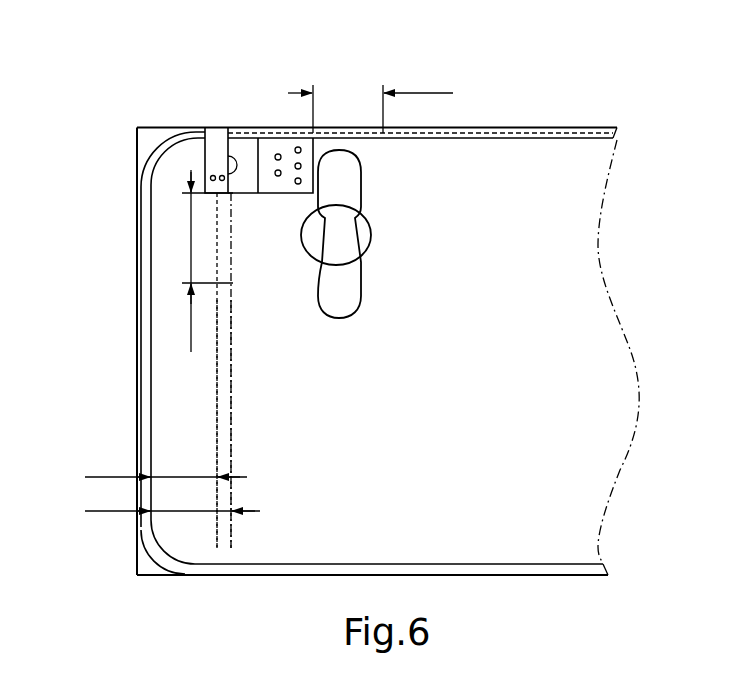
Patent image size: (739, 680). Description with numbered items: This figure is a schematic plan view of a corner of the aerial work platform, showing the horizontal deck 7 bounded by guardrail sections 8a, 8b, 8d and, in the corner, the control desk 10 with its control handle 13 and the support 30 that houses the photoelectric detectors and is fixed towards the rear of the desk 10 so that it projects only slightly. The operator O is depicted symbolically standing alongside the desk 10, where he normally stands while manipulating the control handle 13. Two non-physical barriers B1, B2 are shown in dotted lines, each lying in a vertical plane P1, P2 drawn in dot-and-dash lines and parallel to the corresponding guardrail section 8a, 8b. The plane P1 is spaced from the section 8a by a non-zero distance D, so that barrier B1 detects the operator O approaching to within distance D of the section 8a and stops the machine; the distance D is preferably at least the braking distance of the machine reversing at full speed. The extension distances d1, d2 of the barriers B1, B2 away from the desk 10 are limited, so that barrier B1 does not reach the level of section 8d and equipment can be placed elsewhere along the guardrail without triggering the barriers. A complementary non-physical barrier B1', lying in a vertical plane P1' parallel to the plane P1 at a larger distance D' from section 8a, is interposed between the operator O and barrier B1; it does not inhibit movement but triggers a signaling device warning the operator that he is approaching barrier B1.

The deck 7 is at (562, 288).
The guardrail section 8a is at (141, 355).
The guardrail section 8b is at (578, 127).
The guardrail section 8d is at (276, 576).
The control desk 10 is at (192, 158).
The control handle 13 is at (243, 147).
The support 30 is at (217, 142).
The operator O is at (360, 235).
The non-physical barrier B1 is at (133, 370).
The complementary non-physical barrier B1' is at (286, 370).
The non-physical barrier B2 is at (270, 129).
The vertical plane P1 is at (266, 424).
The vertical plane P1' is at (290, 424).
The vertical plane P2 is at (475, 131).
The extension distance d1 is at (195, 261).
The extension distance d2 is at (370, 99).
The distance D is at (166, 462).
The distance D' is at (172, 497).